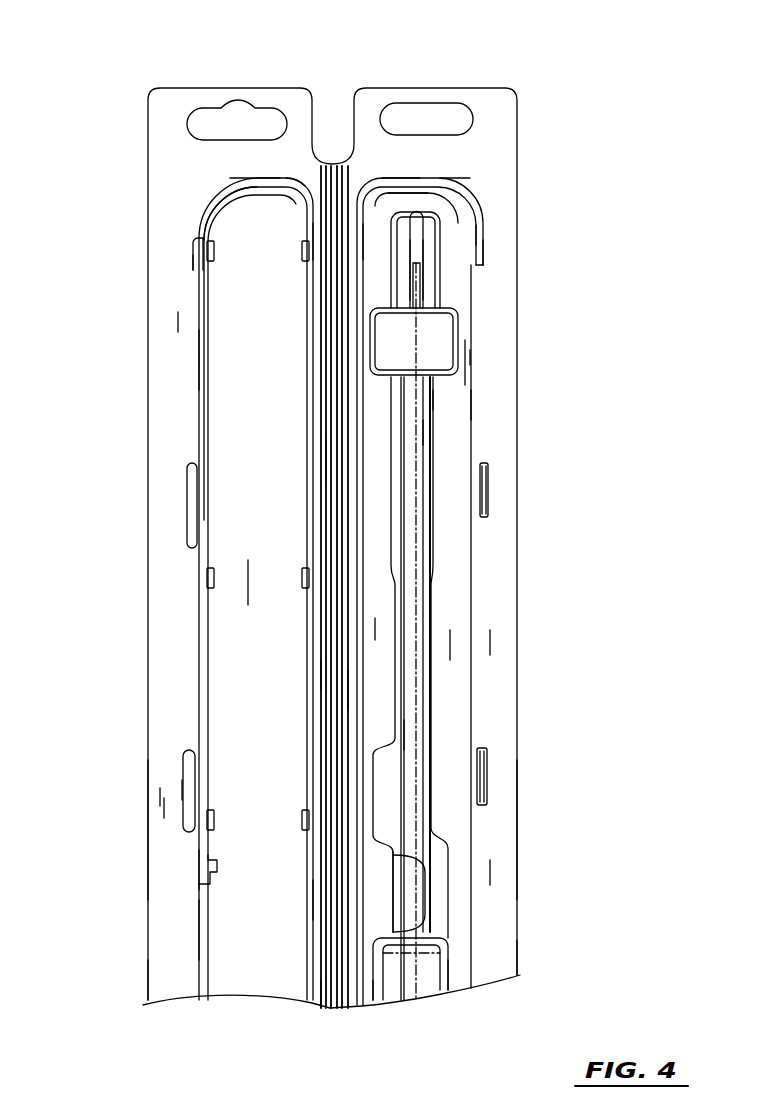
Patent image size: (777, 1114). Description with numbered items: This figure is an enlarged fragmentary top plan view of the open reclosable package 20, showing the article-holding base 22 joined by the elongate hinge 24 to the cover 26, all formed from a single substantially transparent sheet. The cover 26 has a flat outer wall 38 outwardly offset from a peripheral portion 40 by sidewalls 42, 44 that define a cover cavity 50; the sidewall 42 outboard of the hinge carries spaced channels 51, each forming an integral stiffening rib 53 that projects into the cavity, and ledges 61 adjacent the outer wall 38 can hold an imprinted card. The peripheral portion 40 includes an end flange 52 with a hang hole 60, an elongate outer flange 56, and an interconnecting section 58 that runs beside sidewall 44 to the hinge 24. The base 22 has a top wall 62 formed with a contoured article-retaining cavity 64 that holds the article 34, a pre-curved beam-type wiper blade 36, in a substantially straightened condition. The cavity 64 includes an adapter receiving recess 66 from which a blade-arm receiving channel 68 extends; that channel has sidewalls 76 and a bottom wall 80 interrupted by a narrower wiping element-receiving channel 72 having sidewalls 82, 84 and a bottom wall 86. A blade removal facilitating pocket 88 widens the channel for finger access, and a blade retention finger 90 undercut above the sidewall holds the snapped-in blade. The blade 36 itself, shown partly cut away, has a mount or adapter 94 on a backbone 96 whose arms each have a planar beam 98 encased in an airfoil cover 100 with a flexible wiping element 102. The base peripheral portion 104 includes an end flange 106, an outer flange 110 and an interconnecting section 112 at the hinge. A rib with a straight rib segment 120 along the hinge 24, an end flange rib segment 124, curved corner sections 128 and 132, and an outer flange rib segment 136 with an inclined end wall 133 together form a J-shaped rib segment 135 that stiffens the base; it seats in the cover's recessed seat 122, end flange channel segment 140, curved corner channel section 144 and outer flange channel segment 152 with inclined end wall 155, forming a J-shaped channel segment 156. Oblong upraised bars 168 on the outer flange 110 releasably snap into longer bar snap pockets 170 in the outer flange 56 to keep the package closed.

The reclosable package 20 is at (580, 175).
The article-holding base 22 is at (562, 546).
The hinge 24 is at (333, 158).
The cover 26 is at (130, 800).
The article 34 is at (465, 986).
The beam-type wiper blade 36 is at (455, 975).
The outer wall 38 is at (237, 976).
The peripheral portion 40 is at (163, 354).
The sidewall 42 is at (211, 942).
The sidewall 44 is at (312, 900).
The cover cavity 50 is at (201, 376).
The channel 51 is at (197, 869).
The end flange 52 is at (248, 166).
The sidewall stiffening rib 53 is at (218, 873).
The outer flange 56 is at (182, 511).
The interconnecting section 58 is at (322, 456).
The hang hole 60 is at (214, 109).
The ledges 61 is at (303, 250).
The top wall 62 is at (462, 405).
The article-retaining cavity 64 is at (434, 400).
The adapter receiving recess 66 is at (455, 937).
The blade-arm receiving channel 68 is at (438, 289).
The wiping element-receiving channel 72 is at (470, 192).
The sidewall 76 is at (441, 547).
The bottom wall 80 is at (438, 455).
The sidewall 82 is at (426, 245).
The sidewall 84 is at (410, 227).
The bottom wall 86 is at (424, 232).
The blade removal facilitating pocket 88 is at (462, 324).
The blade retention finger 90 is at (403, 878).
The mount or adapter 94 is at (384, 991).
The backbone 96 is at (434, 677).
The beam 98 is at (437, 624).
The cover 100 is at (420, 732).
The wiping element 102 is at (427, 430).
The peripheral portion 104 is at (522, 849).
The end flange 106 is at (457, 171).
The outer flange 110 is at (505, 964).
The interconnecting section 112 is at (443, 108).
The straight rib segment 120 is at (361, 697).
The recessed seat 122 is at (305, 990).
The end flange rib segment 124 is at (403, 178).
The curved corner interconnecting rib section 128 is at (362, 178).
The curved corner interconnecting rib section 132 is at (480, 191).
The inclined end wall 133 is at (482, 269).
The J-shaped rib segment 135 is at (430, 200).
The outer flange rib segment 136 is at (482, 254).
The end flange channel segment 140 is at (277, 178).
The curved corner interconnecting channel section 144 is at (298, 178).
The outer flange channel segment 152 is at (194, 239).
The inclined end wall 155 is at (196, 268).
The J-shaped channel segment 156 is at (213, 187).
The upraised bar 168 is at (494, 480).
The bar snap pocket 170 is at (182, 538).